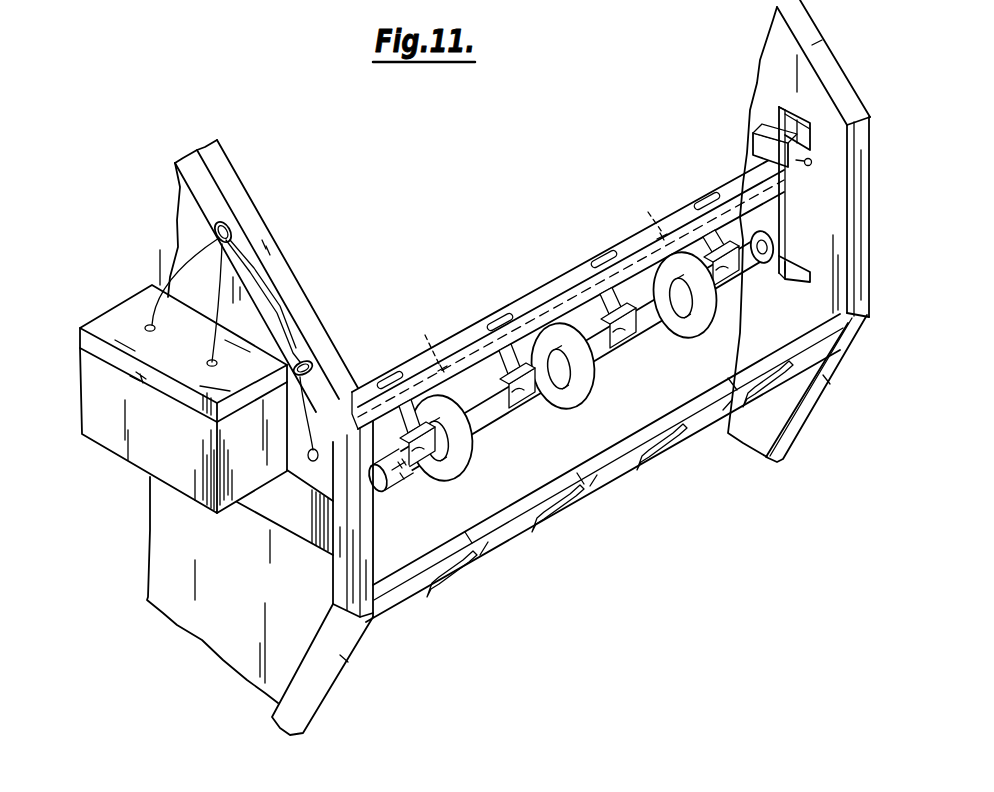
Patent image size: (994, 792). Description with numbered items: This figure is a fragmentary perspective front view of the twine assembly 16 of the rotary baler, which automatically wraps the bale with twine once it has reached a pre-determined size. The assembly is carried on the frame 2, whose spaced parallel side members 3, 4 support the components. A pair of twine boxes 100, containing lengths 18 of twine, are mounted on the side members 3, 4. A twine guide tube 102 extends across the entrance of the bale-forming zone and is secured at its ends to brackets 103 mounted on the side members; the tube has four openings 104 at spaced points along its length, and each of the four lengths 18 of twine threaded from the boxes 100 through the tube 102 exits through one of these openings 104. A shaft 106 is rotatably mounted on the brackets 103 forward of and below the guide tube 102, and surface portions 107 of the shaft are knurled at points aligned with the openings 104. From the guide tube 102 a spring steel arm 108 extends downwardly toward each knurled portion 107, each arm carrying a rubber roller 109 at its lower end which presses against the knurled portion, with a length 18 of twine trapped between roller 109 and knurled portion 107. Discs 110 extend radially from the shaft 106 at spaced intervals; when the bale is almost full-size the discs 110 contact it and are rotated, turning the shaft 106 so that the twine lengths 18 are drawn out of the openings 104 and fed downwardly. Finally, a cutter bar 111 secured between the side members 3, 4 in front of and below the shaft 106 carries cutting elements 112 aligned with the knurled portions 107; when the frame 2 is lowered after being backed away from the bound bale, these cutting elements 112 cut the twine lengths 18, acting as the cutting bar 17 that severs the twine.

The frame 2 is at (260, 240).
The side member 3 is at (185, 220).
The side member 4 is at (783, 43).
The twine assembly 16 is at (586, 370).
The cutting bar 17 is at (604, 478).
The twine lengths 18 is at (278, 310).
The twine boxes 100 is at (142, 452).
The twine guide tube 102 is at (568, 292).
The brackets 103 is at (773, 208).
The openings 104 is at (540, 297).
The shaft 106 is at (763, 252).
The knurled surface portions 107 is at (617, 346).
The spring steel arm 108 is at (496, 362).
The rubber roller 109 is at (424, 474).
The discs 110 is at (455, 471).
The cutter bar 111 is at (620, 473).
The cutting elements 112 is at (544, 517).